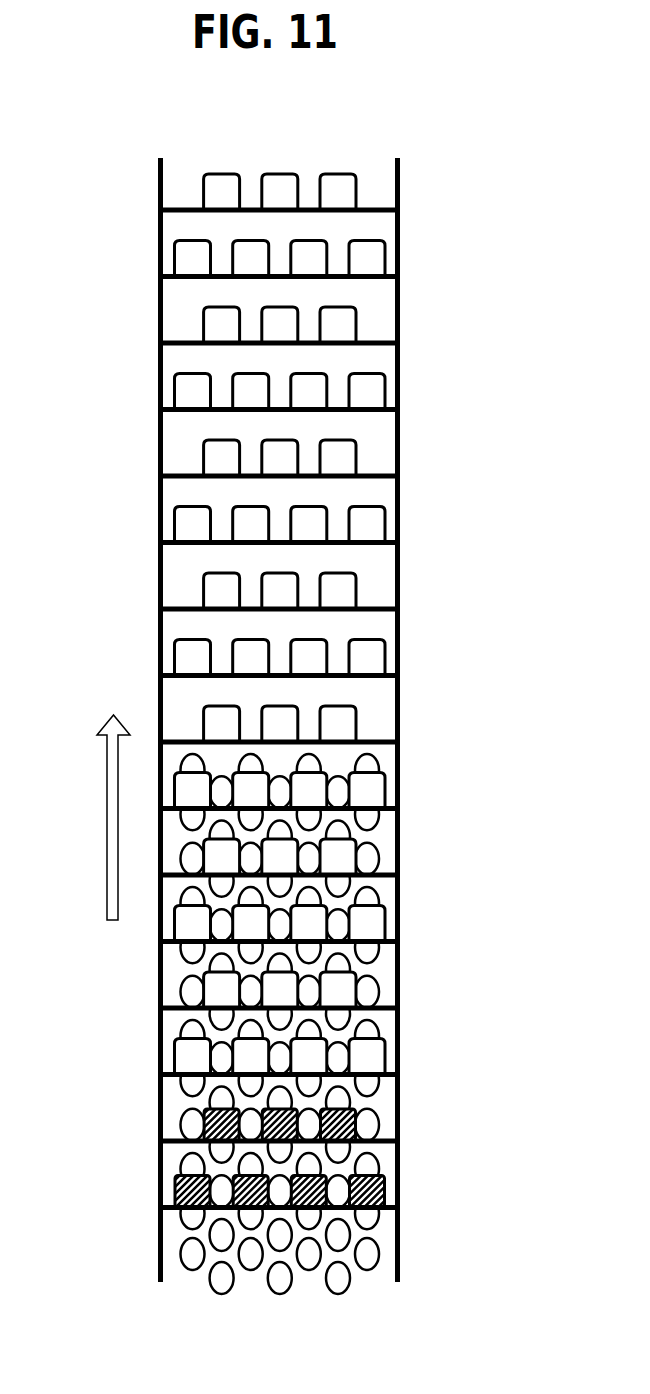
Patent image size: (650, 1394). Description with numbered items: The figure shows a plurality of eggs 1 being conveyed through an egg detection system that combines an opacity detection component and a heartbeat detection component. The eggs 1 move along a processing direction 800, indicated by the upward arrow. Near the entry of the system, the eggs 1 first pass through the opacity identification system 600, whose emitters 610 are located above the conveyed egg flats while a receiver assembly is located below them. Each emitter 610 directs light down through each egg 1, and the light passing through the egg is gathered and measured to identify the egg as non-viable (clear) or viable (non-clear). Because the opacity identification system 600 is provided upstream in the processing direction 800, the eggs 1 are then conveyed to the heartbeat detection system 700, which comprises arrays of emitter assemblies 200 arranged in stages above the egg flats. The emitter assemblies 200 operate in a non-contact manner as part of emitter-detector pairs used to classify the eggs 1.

The egg 1 is at (222, 967).
The emitter assembly 200 is at (200, 400).
The emitter 610 is at (213, 1105).
The heartbeat detection system 700 is at (443, 192).
The opacity identification system 600 is at (443, 1103).
The processing direction 800 is at (112, 805).